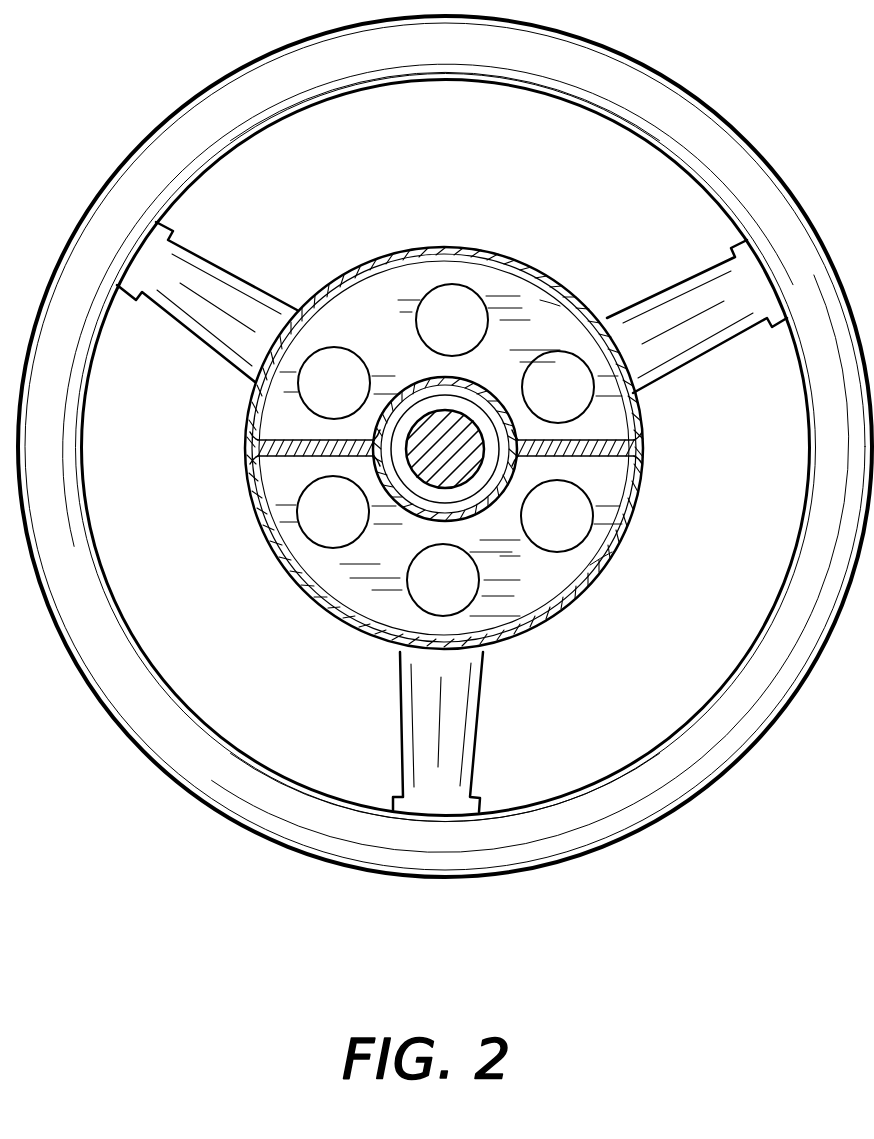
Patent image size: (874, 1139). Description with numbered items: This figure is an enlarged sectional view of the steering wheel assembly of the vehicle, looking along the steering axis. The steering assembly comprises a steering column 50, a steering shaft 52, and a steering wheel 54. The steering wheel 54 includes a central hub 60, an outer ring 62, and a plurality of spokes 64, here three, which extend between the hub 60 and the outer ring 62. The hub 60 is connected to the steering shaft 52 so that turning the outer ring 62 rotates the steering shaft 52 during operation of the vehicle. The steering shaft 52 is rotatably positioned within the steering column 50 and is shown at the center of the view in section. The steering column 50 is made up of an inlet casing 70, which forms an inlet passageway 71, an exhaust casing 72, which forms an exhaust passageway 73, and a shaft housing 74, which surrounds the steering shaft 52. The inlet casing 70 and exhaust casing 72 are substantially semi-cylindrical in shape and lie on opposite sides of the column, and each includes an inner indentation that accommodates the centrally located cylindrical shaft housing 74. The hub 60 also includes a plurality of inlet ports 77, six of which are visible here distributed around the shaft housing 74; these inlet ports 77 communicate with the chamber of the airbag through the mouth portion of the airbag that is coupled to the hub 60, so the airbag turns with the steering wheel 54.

The steering column 50 is at (380, 256).
The steering shaft 52 is at (440, 430).
The steering wheel 54 is at (748, 128).
The hub 60 is at (334, 278).
The outer ring 62 is at (237, 92).
The spokes 64 is at (208, 282).
The inlet casing 70 is at (527, 305).
The inlet passageway 71 is at (543, 300).
The exhaust casing 72 is at (605, 572).
The exhaust passageway 73 is at (513, 560).
The shaft housing 74 is at (640, 442).
The inlet ports 77 is at (451, 592).